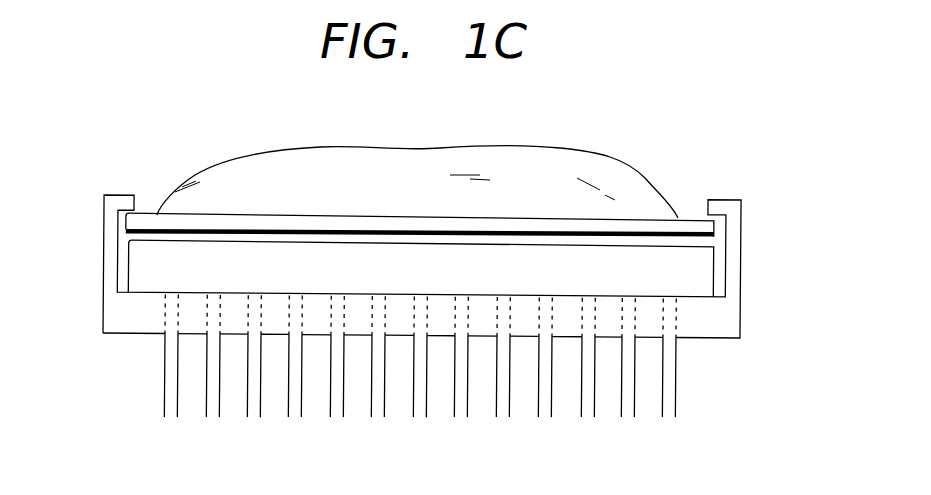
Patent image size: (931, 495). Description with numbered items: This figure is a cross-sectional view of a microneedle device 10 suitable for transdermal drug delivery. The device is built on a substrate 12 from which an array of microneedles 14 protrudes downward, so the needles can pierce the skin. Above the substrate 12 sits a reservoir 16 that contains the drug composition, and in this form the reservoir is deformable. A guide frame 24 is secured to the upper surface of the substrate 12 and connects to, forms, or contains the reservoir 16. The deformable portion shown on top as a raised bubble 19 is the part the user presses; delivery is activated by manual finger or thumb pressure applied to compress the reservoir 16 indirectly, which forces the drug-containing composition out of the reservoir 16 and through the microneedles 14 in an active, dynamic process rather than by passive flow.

The electronic package assembly 10 is at (160, 114).
The substrate 12 is at (740, 322).
The microneedles 14 is at (678, 382).
The reservoir 16 is at (145, 268).
The dome lens 19 is at (610, 156).
The plunger guide frame 24 is at (730, 228).